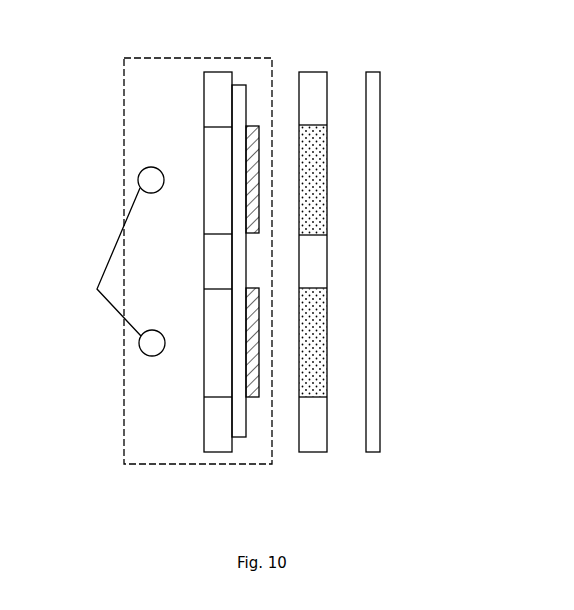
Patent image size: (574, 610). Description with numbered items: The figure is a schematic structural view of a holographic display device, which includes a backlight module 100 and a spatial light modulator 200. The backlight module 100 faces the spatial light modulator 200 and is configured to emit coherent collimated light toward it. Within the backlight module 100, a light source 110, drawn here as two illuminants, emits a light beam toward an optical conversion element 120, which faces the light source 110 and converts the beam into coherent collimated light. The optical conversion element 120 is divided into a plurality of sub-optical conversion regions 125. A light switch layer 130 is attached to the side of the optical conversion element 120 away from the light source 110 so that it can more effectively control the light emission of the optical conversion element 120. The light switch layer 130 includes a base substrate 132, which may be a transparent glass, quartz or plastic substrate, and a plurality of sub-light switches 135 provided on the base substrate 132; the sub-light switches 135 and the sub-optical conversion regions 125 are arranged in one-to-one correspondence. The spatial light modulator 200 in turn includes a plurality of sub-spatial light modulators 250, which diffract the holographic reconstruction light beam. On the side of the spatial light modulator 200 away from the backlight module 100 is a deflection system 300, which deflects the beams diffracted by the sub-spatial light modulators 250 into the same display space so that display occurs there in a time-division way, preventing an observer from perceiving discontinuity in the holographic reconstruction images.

The backlight module 100 is at (198, 288).
The light source 110 is at (115, 261).
The optical conversion element 120 is at (255, 232).
The sub-optical conversion region 125 is at (176, 232).
The light switch layer 130 is at (296, 302).
The base substrate 132 is at (269, 302).
The sub-light switch 135 is at (286, 309).
The spatial light modulator 200 is at (350, 232).
The sub-spatial light modulator 250 is at (376, 261).
The deflection system 300 is at (409, 262).